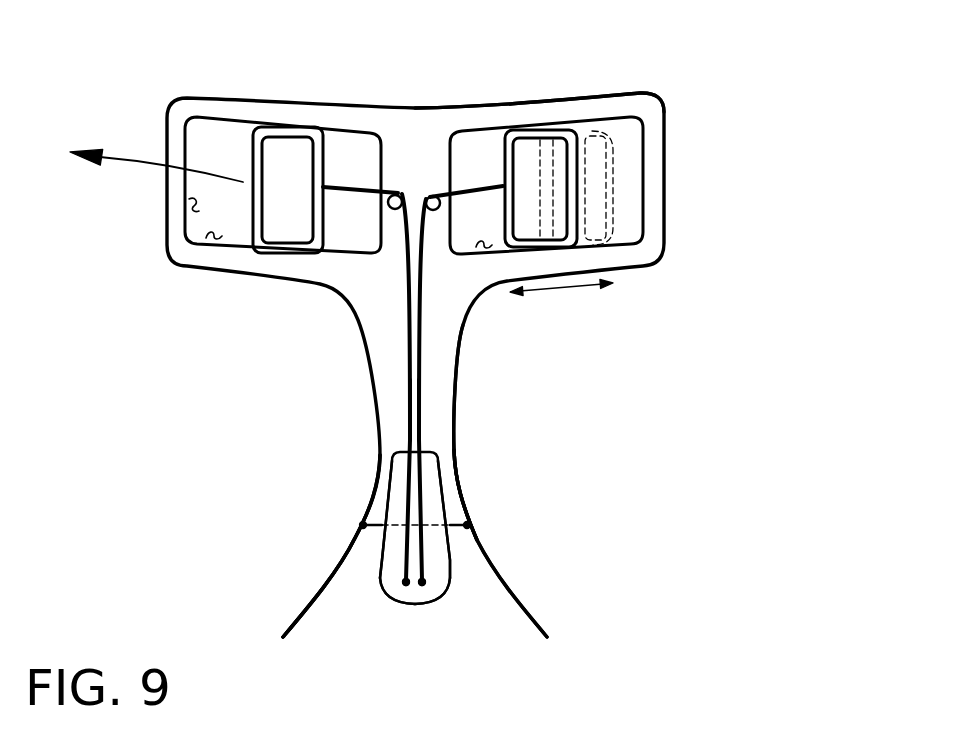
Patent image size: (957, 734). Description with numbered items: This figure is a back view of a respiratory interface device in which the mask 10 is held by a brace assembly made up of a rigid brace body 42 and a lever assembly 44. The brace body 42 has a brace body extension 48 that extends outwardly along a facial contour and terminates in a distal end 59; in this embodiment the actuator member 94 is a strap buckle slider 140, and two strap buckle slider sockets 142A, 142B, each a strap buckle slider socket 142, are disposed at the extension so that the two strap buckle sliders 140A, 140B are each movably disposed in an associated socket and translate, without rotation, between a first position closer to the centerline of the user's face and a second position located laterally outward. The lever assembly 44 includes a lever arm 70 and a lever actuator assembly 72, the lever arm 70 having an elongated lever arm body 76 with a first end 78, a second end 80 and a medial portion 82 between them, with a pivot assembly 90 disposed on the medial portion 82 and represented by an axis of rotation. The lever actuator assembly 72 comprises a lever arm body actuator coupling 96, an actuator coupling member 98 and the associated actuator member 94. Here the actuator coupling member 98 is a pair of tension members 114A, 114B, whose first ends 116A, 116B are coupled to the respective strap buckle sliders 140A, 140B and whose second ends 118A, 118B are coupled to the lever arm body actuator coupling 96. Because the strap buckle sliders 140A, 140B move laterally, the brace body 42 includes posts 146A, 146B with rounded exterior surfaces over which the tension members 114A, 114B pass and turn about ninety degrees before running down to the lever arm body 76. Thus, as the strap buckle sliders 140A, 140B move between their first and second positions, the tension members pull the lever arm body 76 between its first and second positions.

The mask 10 is at (507, 610).
The brace body 42 is at (352, 552).
The lever assembly 44 is at (558, 496).
The brace body extension 48 is at (462, 482).
The distal end 59 is at (592, 96).
The lever arm 70 is at (381, 594).
The lever actuator assembly 72 is at (413, 156).
The lever arm body 76 is at (422, 603).
The first end 78 is at (403, 595).
The second end 80 is at (400, 463).
The medial portion 82 is at (450, 543).
The pivot assembly 90 is at (470, 530).
The actuator member 94 is at (287, 127).
The lever arm body actuator coupling 96 is at (444, 598).
The actuator coupling member 98 is at (407, 403).
The first tension member 114A is at (407, 347).
The second tension member 114B is at (423, 373).
The first tension member first end 116A is at (367, 187).
The second tension member first end 116B is at (463, 193).
The first tension member second end 118A is at (415, 562).
The second tension member second end 118B is at (415, 562).
The strap buckle slider 140 is at (233, 90).
The first strap buckle slider 140A is at (248, 250).
The second strap buckle slider 140B is at (575, 247).
The strap buckle slider socket 142 is at (190, 203).
The first strap buckle slider socket 142A is at (210, 240).
The second strap buckle slider socket 142B is at (478, 252).
The first post 146A is at (392, 210).
The second post 146B is at (437, 210).